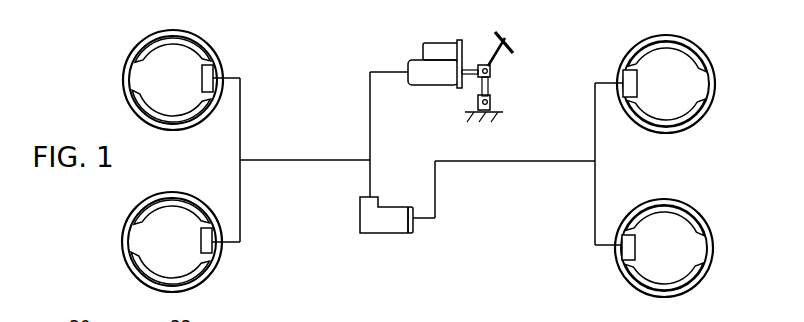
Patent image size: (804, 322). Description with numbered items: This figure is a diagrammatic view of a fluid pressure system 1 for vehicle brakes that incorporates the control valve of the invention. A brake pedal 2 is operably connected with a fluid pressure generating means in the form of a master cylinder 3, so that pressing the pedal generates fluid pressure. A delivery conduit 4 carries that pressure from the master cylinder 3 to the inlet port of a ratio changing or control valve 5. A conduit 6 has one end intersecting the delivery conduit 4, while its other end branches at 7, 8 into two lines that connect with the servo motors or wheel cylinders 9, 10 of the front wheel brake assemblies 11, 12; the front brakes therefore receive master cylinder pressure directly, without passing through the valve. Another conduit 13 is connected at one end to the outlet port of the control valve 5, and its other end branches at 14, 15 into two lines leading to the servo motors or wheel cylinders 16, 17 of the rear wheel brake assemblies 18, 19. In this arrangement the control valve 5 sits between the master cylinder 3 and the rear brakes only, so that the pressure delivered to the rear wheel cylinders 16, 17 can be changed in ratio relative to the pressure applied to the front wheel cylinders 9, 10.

The fluid pressure system 1 is at (305, 46).
The brake pedal 2 is at (511, 37).
The master cylinder 3 is at (441, 51).
The delivery conduit 4 is at (370, 111).
The control valve 5 is at (382, 234).
The conduit 6 is at (310, 162).
The branch 7 is at (240, 122).
The branch 8 is at (240, 207).
The wheel cylinder 9 is at (213, 71).
The wheel cylinder 10 is at (210, 248).
The front wheel brake assembly 11 is at (164, 89).
The front wheel brake assembly 12 is at (163, 252).
The conduit 13 is at (500, 163).
The branch 14 is at (595, 127).
The branch 15 is at (595, 211).
The wheel cylinder 16 is at (625, 78).
The wheel cylinder 17 is at (623, 253).
The rear wheel brake assembly 18 is at (658, 94).
The rear wheel brake assembly 19 is at (656, 258).